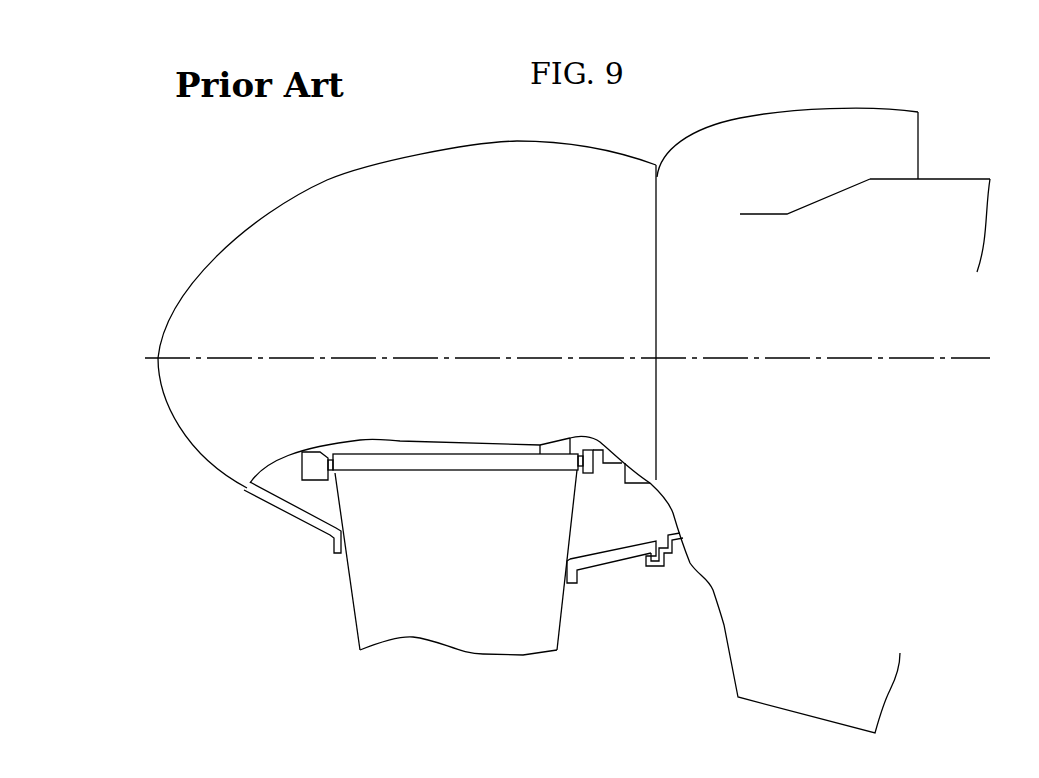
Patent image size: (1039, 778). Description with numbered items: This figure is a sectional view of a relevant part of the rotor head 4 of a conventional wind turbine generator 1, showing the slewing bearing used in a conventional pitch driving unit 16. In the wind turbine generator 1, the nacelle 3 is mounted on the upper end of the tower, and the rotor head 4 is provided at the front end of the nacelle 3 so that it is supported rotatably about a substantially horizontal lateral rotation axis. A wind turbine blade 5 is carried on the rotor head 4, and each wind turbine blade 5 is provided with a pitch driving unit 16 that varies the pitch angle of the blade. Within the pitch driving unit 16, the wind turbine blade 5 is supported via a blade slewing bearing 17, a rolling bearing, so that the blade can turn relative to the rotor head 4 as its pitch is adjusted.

The wind turbine generator 1 is at (970, 70).
The nacelle 3 is at (952, 178).
The rotor head 4 is at (268, 208).
The wind turbine blade 5 is at (355, 626).
The pitch driving unit 16 is at (551, 442).
The blade slewing bearing 17 is at (580, 452).